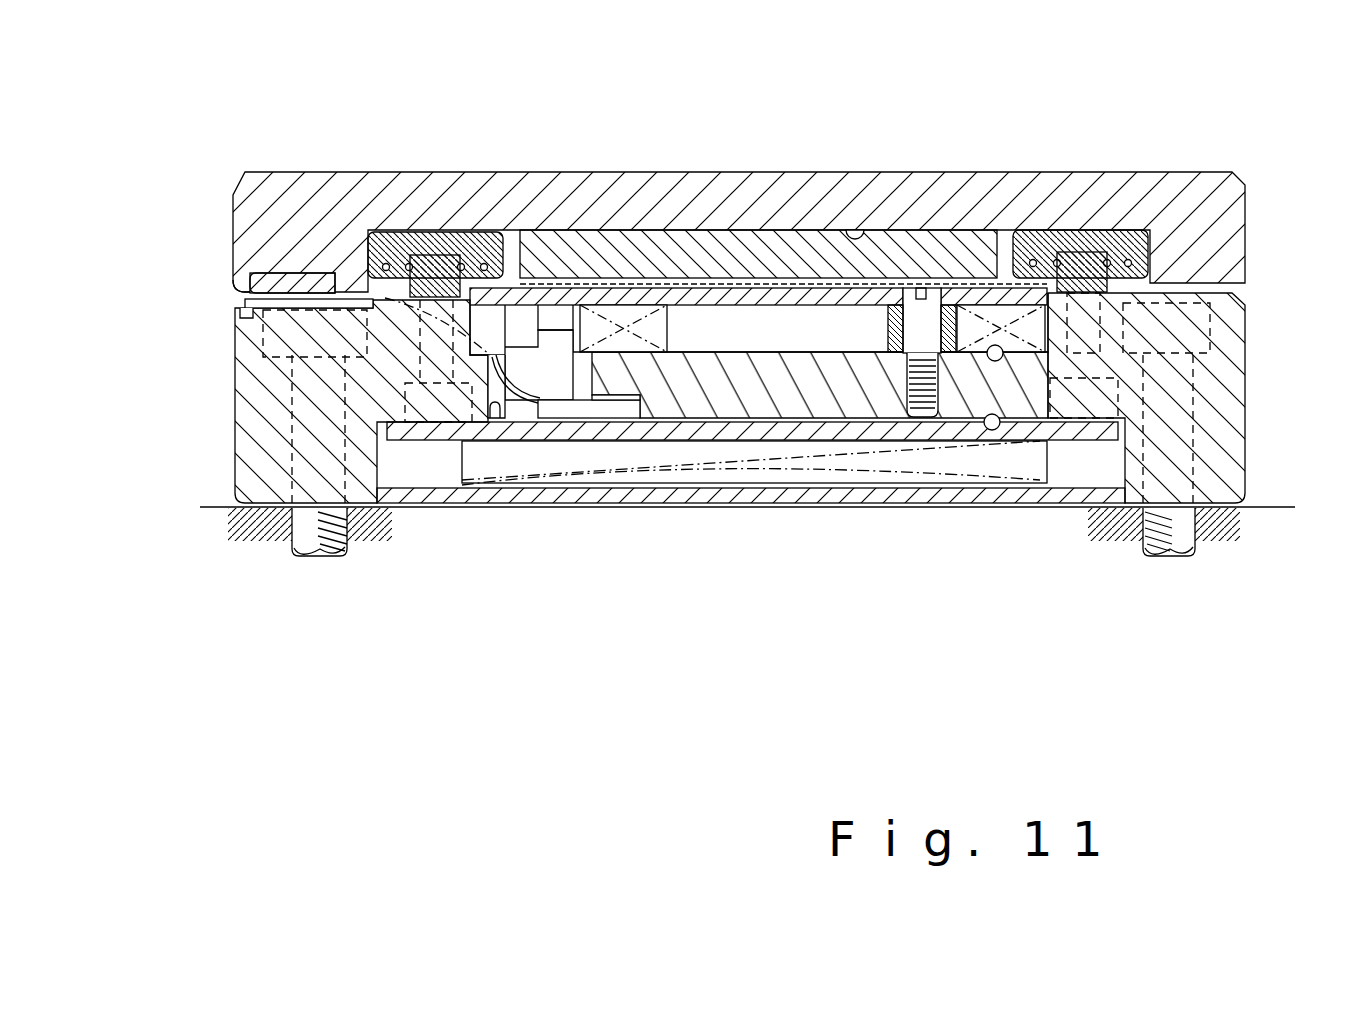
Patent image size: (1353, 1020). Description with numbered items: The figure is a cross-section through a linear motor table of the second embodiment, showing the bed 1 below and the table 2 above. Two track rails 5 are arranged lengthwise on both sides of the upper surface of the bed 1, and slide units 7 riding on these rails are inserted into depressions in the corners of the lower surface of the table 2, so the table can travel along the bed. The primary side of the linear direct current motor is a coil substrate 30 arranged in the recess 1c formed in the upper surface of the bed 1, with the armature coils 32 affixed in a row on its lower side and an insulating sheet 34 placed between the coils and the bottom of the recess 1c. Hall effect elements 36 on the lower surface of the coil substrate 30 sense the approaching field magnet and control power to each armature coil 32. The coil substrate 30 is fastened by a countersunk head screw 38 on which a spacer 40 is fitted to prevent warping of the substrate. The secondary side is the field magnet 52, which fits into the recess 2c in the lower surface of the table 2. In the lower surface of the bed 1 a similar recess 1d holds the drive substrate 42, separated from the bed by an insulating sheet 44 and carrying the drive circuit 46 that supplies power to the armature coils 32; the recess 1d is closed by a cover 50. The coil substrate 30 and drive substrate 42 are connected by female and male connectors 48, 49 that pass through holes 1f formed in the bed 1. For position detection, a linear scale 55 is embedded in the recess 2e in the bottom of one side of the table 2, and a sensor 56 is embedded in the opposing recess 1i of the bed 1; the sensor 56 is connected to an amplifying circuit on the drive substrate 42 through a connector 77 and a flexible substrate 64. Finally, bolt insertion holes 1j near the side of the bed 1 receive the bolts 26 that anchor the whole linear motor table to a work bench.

The bed 1 is at (1260, 400).
The recess 1c is at (1006, 355).
The recess 1d is at (988, 364).
The holes 1f is at (498, 406).
The recess 1i is at (285, 312).
The bolt insertion holes 1j is at (328, 565).
The table 2 is at (1256, 198).
The recess 2c is at (857, 228).
The recess 2e is at (243, 290).
The track rails 5 is at (433, 258).
The slide units 7 is at (397, 226).
The bolts 26 is at (335, 557).
The coil substrate 30 is at (528, 290).
The armature coils 32 is at (622, 308).
The insulating sheet 34 is at (680, 352).
The Hall effect elements 36 is at (555, 312).
The countersunk head screw 38 is at (910, 290).
The spacer 40 is at (952, 304).
The drive substrate 42 is at (617, 412).
The insulating sheet 44 is at (742, 346).
The drive circuit 46 is at (808, 470).
The female connectors 48 is at (523, 332).
The male connectors 49 is at (547, 378).
The cover 50 is at (883, 492).
The field magnet 52 is at (792, 242).
The linear scale 55 is at (283, 274).
The sensor 56 is at (257, 305).
The flexible substrate 64 is at (518, 398).
The connector 77 is at (645, 410).